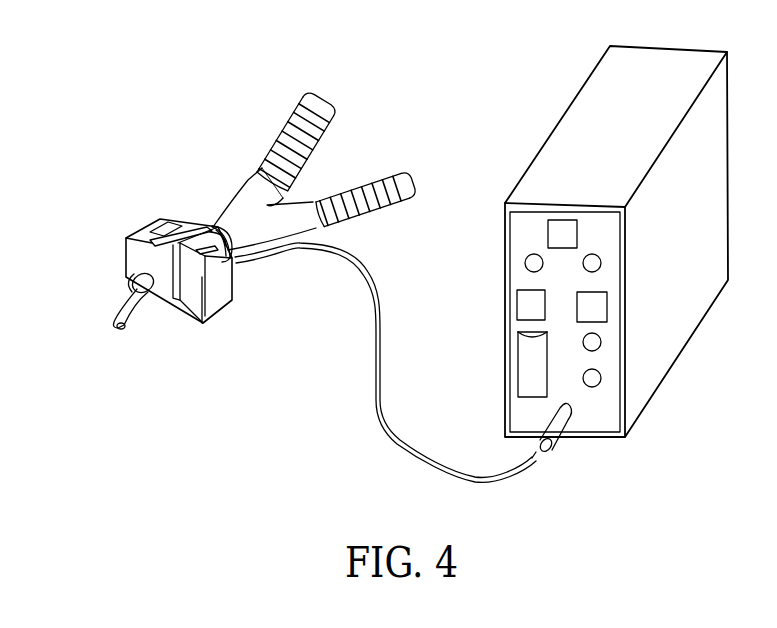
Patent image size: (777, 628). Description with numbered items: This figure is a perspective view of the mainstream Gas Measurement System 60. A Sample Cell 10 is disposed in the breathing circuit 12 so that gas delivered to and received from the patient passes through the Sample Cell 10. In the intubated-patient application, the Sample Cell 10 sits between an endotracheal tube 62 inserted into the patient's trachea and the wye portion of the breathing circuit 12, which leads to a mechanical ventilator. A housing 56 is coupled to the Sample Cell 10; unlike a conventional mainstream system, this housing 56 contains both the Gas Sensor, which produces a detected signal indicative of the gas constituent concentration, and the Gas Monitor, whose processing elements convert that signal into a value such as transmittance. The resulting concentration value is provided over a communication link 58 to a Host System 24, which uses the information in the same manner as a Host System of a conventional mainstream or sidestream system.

The Sample Cell 10 is at (185, 222).
The breathing circuit 12 is at (260, 188).
The Host System 24 is at (548, 137).
The housing 56 is at (190, 325).
The communication link 58 is at (373, 382).
The mainstream Gas Measurement System 60 is at (113, 213).
The endotracheal tube 62 is at (108, 307).